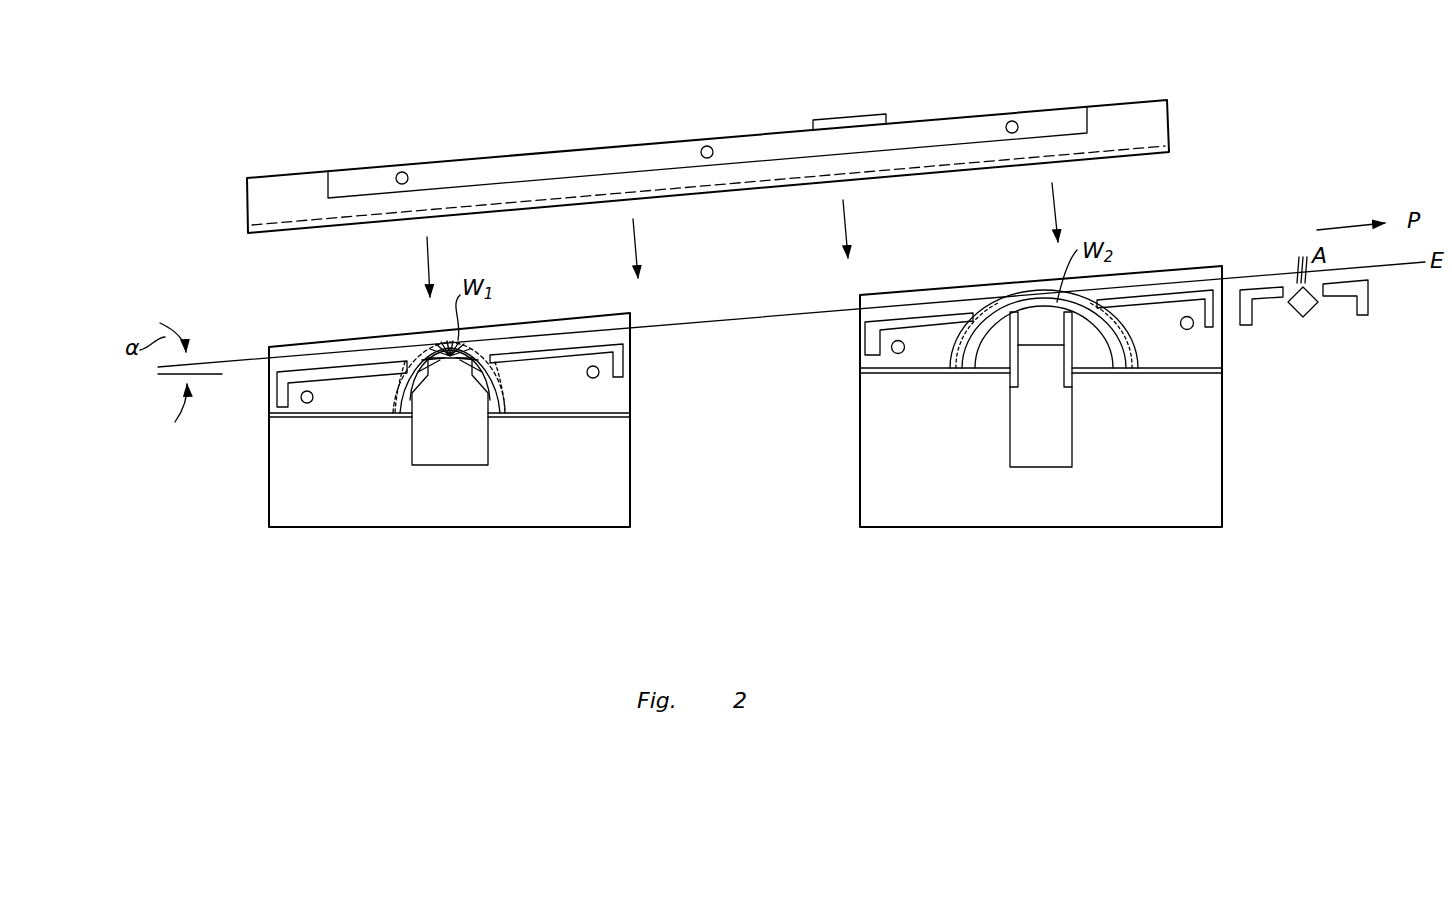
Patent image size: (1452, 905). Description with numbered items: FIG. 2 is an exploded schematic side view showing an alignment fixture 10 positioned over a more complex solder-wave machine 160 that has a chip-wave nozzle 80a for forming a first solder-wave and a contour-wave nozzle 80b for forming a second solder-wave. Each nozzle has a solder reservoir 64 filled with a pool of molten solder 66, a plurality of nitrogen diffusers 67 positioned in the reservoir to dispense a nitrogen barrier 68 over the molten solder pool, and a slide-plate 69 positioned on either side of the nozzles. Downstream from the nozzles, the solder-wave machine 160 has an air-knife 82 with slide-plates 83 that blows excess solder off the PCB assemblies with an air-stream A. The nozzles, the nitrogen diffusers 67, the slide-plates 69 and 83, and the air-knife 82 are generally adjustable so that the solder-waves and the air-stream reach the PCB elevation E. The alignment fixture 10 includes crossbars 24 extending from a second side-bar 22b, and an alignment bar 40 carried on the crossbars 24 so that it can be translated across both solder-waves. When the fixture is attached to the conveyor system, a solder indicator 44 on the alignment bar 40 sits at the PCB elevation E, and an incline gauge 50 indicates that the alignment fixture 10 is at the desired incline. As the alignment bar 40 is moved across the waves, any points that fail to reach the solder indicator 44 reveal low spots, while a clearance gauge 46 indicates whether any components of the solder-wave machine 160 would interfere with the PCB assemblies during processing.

The alignment fixture 10 is at (958, 60).
The alignment bar 40 is at (1130, 115).
The solder indicator 44 is at (308, 220).
The clearance gauge 46 is at (283, 233).
The second side-bar 22b is at (508, 165).
The incline gauge 50 is at (832, 117).
The crossbars 24 is at (402, 172).
The solder-wave machine 160 is at (218, 488).
The solder reservoir 64 is at (269, 510).
The molten solder 66 is at (610, 468).
The nitrogen barrier 68 is at (630, 415).
The slide-plate 69 is at (277, 388).
The nitrogen diffusers 67 is at (307, 404).
The chip-wave nozzle 80a is at (452, 467).
The contour-wave nozzle 80b is at (1050, 468).
The slide-plates 83 is at (1257, 288).
The air-knife 82 is at (1307, 317).